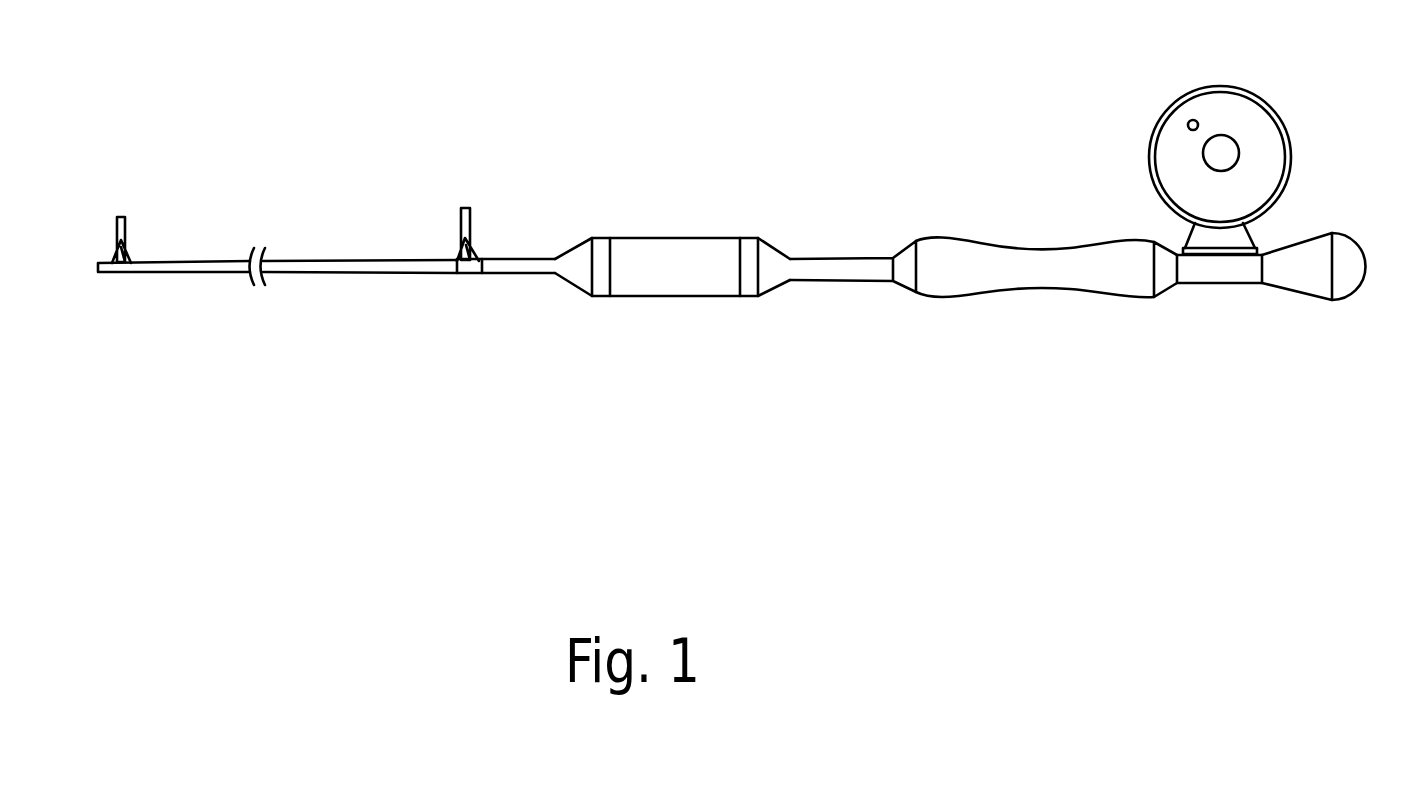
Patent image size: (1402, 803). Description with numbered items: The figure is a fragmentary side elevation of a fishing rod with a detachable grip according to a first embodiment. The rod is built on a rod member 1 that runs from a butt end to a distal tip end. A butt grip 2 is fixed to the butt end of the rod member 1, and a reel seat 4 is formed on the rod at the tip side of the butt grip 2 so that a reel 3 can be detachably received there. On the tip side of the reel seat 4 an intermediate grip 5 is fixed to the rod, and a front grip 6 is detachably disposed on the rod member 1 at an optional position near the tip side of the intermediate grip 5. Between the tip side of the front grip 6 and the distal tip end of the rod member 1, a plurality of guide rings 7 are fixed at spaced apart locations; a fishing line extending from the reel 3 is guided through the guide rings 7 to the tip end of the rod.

The rod member 1 is at (513, 268).
The butt grip 2 is at (1315, 255).
The reel 3 is at (1224, 112).
The reel seat 4 is at (1210, 272).
The intermediate grip 5 is at (1020, 274).
The front grip 6 is at (663, 275).
The guide rings 7 is at (471, 220).